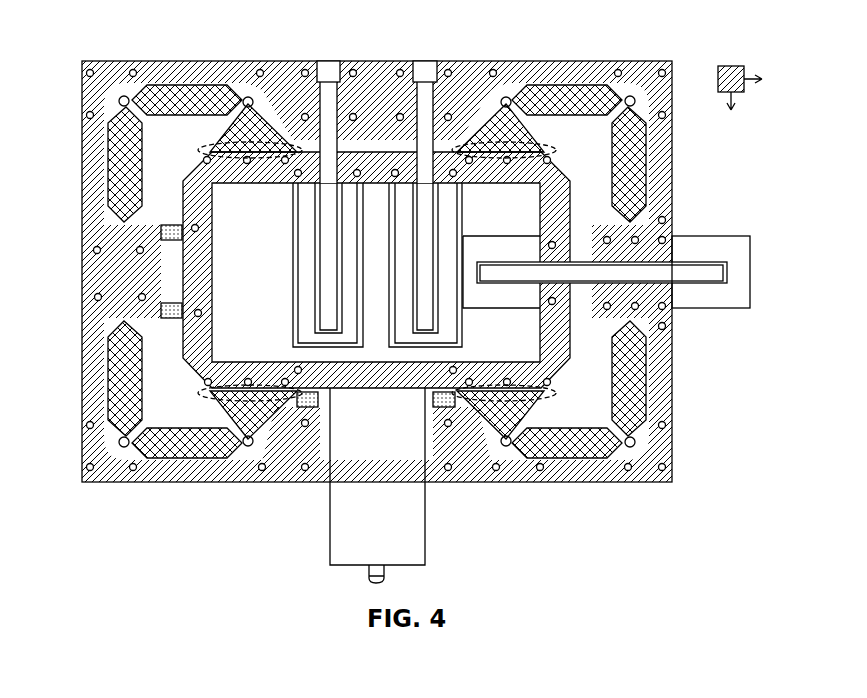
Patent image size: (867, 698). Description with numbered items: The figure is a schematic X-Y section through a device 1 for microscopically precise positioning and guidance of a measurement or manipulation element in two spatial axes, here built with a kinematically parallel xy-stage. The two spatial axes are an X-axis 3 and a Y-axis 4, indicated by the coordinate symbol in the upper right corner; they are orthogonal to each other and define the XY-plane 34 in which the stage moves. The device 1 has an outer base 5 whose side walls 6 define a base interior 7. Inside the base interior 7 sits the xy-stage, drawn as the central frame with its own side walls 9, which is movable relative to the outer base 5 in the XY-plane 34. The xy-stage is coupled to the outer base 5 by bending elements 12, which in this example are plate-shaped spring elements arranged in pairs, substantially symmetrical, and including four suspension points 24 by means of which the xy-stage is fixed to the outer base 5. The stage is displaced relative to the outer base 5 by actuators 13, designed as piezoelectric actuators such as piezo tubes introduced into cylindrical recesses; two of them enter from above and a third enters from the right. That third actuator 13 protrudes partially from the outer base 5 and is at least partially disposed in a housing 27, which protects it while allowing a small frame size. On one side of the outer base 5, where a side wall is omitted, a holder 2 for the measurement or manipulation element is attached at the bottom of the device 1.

The device 1 is at (86, 42).
The holder 2 is at (376, 570).
The X-axis 3 is at (722, 66).
The Y-axis 4 is at (742, 66).
The outer base 5 is at (97, 230).
The side walls 6 is at (512, 70).
The base interior 7 is at (586, 212).
The side walls 9 is at (203, 332).
The bending elements 12 is at (252, 122).
The actuators 13 is at (328, 127).
The suspension points 24 is at (292, 140).
The housing 27 is at (706, 300).
The XY-plane 34 is at (752, 92).